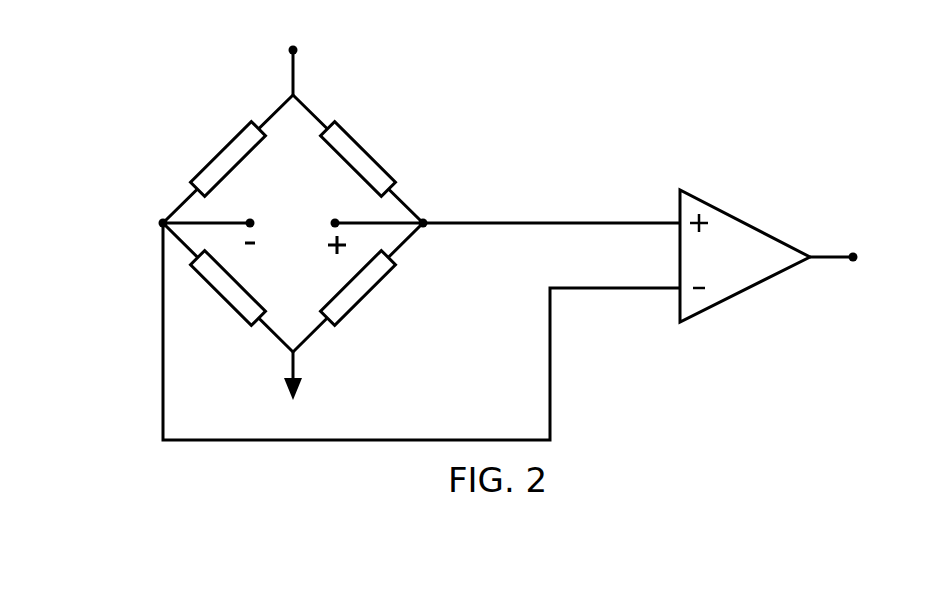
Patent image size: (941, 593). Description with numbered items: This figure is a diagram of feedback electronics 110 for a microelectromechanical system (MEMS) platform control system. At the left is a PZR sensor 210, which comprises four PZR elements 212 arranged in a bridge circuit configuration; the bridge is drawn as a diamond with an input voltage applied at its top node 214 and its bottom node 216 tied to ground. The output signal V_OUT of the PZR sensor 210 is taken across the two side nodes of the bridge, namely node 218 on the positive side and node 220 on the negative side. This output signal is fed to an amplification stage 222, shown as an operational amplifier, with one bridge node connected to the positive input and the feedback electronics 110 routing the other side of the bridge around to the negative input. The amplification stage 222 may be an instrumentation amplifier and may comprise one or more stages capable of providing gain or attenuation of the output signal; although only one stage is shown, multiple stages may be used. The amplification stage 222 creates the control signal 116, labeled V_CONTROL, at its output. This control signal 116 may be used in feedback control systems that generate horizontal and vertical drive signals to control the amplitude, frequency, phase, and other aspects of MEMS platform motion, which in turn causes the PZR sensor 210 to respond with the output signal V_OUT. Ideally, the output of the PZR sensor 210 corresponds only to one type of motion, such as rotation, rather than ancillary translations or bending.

The feedback electronics 110 is at (546, 231).
The PZR sensor 210 is at (407, 109).
The PZR elements 212 is at (238, 134).
The input voltage node 214 is at (291, 74).
The ground node 216 is at (291, 364).
The node 218 is at (368, 223).
The node 220 is at (228, 223).
The amplification stage 222 is at (745, 223).
The control signal 116 is at (829, 256).